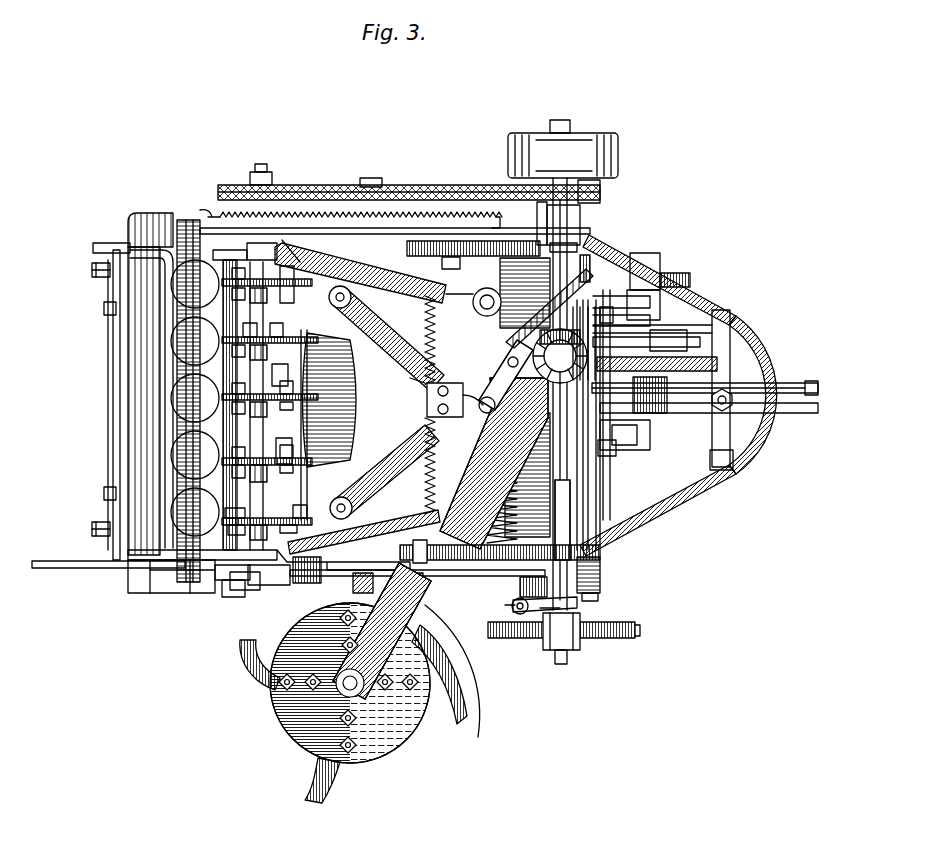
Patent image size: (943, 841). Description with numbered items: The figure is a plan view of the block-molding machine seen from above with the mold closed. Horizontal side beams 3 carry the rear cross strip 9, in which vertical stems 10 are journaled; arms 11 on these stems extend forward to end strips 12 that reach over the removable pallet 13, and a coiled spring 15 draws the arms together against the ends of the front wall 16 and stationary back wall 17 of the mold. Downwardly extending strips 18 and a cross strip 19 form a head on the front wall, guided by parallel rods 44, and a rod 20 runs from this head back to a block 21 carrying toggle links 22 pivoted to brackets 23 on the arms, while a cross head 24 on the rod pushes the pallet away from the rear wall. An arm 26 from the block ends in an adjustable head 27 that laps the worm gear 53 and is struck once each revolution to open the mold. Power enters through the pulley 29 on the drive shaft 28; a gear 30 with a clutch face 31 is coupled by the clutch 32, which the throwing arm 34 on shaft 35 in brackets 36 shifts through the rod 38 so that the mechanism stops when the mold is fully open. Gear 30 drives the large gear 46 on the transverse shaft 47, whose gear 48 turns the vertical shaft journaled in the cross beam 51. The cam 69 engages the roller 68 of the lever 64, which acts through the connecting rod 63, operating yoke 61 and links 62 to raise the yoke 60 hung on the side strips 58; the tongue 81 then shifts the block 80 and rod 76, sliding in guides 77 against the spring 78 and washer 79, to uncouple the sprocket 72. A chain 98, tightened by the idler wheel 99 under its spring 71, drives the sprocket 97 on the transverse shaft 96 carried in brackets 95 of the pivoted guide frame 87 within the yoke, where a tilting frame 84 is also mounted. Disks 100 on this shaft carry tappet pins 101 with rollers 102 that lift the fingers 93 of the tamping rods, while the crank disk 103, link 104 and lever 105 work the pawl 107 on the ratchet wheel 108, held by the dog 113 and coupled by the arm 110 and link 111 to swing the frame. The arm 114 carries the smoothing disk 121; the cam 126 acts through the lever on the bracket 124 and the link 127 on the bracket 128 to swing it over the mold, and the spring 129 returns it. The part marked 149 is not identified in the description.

The horizontal side beams 3 is at (495, 230).
The cross strip 9 is at (478, 245).
The vertical stems 10 is at (473, 308).
The arms 11 is at (420, 283).
The end strips 12 is at (98, 243).
The removable pallet 13 is at (150, 218).
The coiled spring 15 is at (432, 455).
The front wall 16 is at (140, 432).
The back wall 17 is at (527, 475).
The downwardly extending strips 18 is at (103, 308).
The cross strip 19 is at (112, 343).
The rod 20 is at (427, 400).
The block 21 is at (478, 440).
The toggle links 22 is at (398, 348).
The brackets 23 is at (327, 285).
The cross head 24 is at (425, 378).
The arm 26 is at (672, 340).
The adjustable head 27 is at (735, 320).
The drive shaft 28 is at (570, 262).
The pulley 29 is at (600, 140).
The gear 30 is at (578, 640).
The clutch face 31 is at (600, 630).
The clutch 32 is at (580, 605).
The throwing arm 34 is at (545, 610).
The shaft 35 is at (520, 610).
The brackets 36 is at (530, 590).
The rod 38 is at (60, 568).
The parallel rods 44 is at (90, 270).
The large gear 46 is at (636, 632).
The transverse shaft 47 is at (560, 665).
The gear 48 is at (665, 270).
The cross beam 51 is at (606, 455).
The worm gear 53 is at (722, 362).
The upper side strips 58 is at (307, 232).
The yoke 60 is at (192, 222).
The operating yoke 61 is at (650, 520).
The links 62 is at (440, 232).
The connecting rod 63 is at (745, 392).
The lever 64 is at (800, 413).
The anti-friction roller 68 is at (675, 405).
The cam 69 is at (735, 398).
The spring 71 is at (450, 262).
The sprocket 72 is at (598, 192).
The rod 76 is at (598, 522).
The guides 77 is at (580, 547).
The spring 78 is at (600, 572).
The washer 79 is at (600, 592).
The block 80 is at (711, 462).
The tongue 81 is at (657, 507).
The frame 84 is at (143, 252).
The guide frame 87 is at (170, 570).
The finger 93 is at (233, 333).
The brackets 95 is at (300, 235).
The transverse shaft 96 is at (263, 185).
The sprocket 97 is at (225, 195).
The chain 98 is at (418, 258).
The idler wheel 99 is at (390, 214).
The disks 100 is at (280, 517).
The tappet pins 101 is at (278, 398).
The wear sleeves or rollers 102 is at (284, 450).
The crank arm or disk 103 is at (275, 590).
The link 104 is at (250, 585).
The lever 105 is at (240, 585).
The pawl 107 is at (310, 584).
The ratchet wheel 108 is at (270, 656).
The arm 110 is at (155, 575).
The link 111 is at (205, 578).
The dog 113 is at (245, 590).
The arm 114 is at (480, 705).
The disk 121 is at (372, 760).
The bracket 124 is at (615, 265).
The cam 126 is at (690, 280).
The link 127 is at (533, 230).
The bracket 128 is at (483, 348).
The spring 129 is at (520, 583).
The bar 149 is at (665, 305).